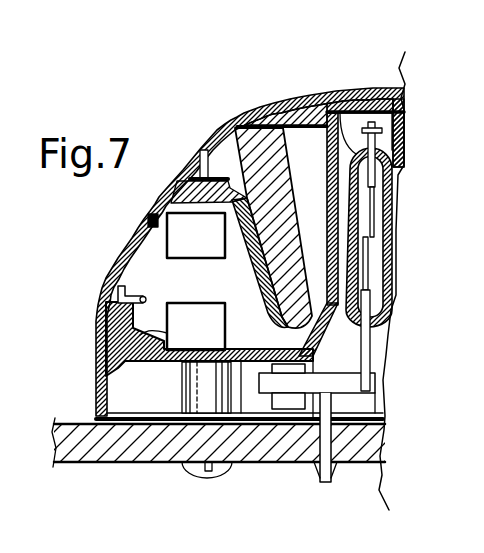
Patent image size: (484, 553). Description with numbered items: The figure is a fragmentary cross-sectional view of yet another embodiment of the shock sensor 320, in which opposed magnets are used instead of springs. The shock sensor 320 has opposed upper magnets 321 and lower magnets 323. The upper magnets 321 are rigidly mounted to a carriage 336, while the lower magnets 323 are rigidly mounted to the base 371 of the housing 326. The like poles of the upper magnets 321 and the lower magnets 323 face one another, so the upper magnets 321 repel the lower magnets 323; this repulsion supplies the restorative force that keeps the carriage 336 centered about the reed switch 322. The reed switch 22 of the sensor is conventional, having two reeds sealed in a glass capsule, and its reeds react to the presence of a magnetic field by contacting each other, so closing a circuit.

The shock sensor 320 is at (218, 114).
The reed switch 322 is at (342, 108).
The carriage 336 is at (213, 151).
The upper magnets 321 is at (167, 239).
The base 371 is at (228, 350).
The lower magnets 323 is at (94, 318).
The housing 326 is at (163, 368).
The reed switch 22 is at (390, 320).